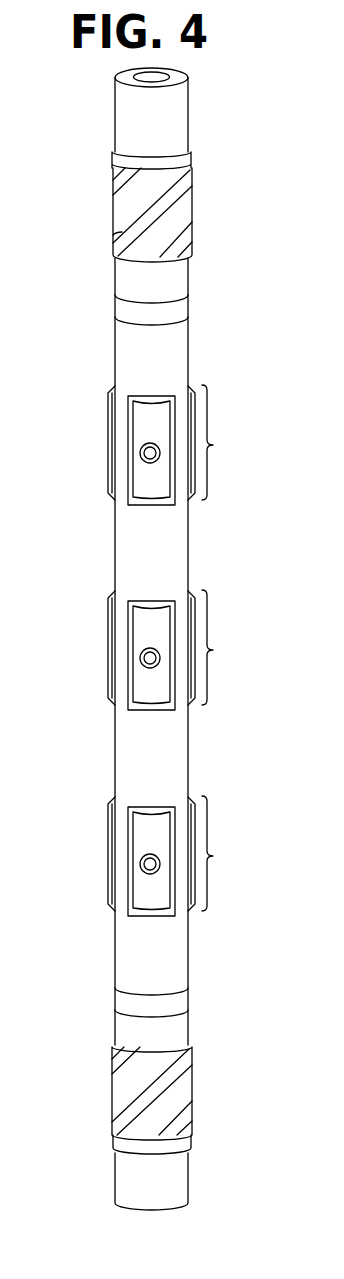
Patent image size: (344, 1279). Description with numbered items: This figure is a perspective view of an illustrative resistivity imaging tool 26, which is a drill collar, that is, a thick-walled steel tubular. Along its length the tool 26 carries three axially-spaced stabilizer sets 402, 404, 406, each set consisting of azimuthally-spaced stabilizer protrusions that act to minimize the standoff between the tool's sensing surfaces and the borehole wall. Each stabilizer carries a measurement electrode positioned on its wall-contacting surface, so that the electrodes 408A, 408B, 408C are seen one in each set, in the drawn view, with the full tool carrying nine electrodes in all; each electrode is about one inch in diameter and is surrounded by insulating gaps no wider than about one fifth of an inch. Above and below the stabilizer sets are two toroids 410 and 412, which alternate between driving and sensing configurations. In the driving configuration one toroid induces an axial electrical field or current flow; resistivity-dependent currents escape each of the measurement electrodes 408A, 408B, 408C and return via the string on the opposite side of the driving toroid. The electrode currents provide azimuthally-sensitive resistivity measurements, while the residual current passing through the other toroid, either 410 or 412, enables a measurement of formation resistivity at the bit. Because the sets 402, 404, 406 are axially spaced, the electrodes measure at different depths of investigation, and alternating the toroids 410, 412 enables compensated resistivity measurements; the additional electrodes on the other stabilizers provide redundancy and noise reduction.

The resistivity imaging tool 26 is at (188, 347).
The toroid 410 is at (153, 318).
The toroid 412 is at (152, 1007).
The stabilizer set 402 is at (185, 445).
The stabilizer set 404 is at (185, 650).
The stabilizer set 406 is at (185, 856).
The measurement electrode 408A is at (145, 450).
The measurement electrode 408B is at (142, 657).
The measurement electrode 408C is at (142, 862).